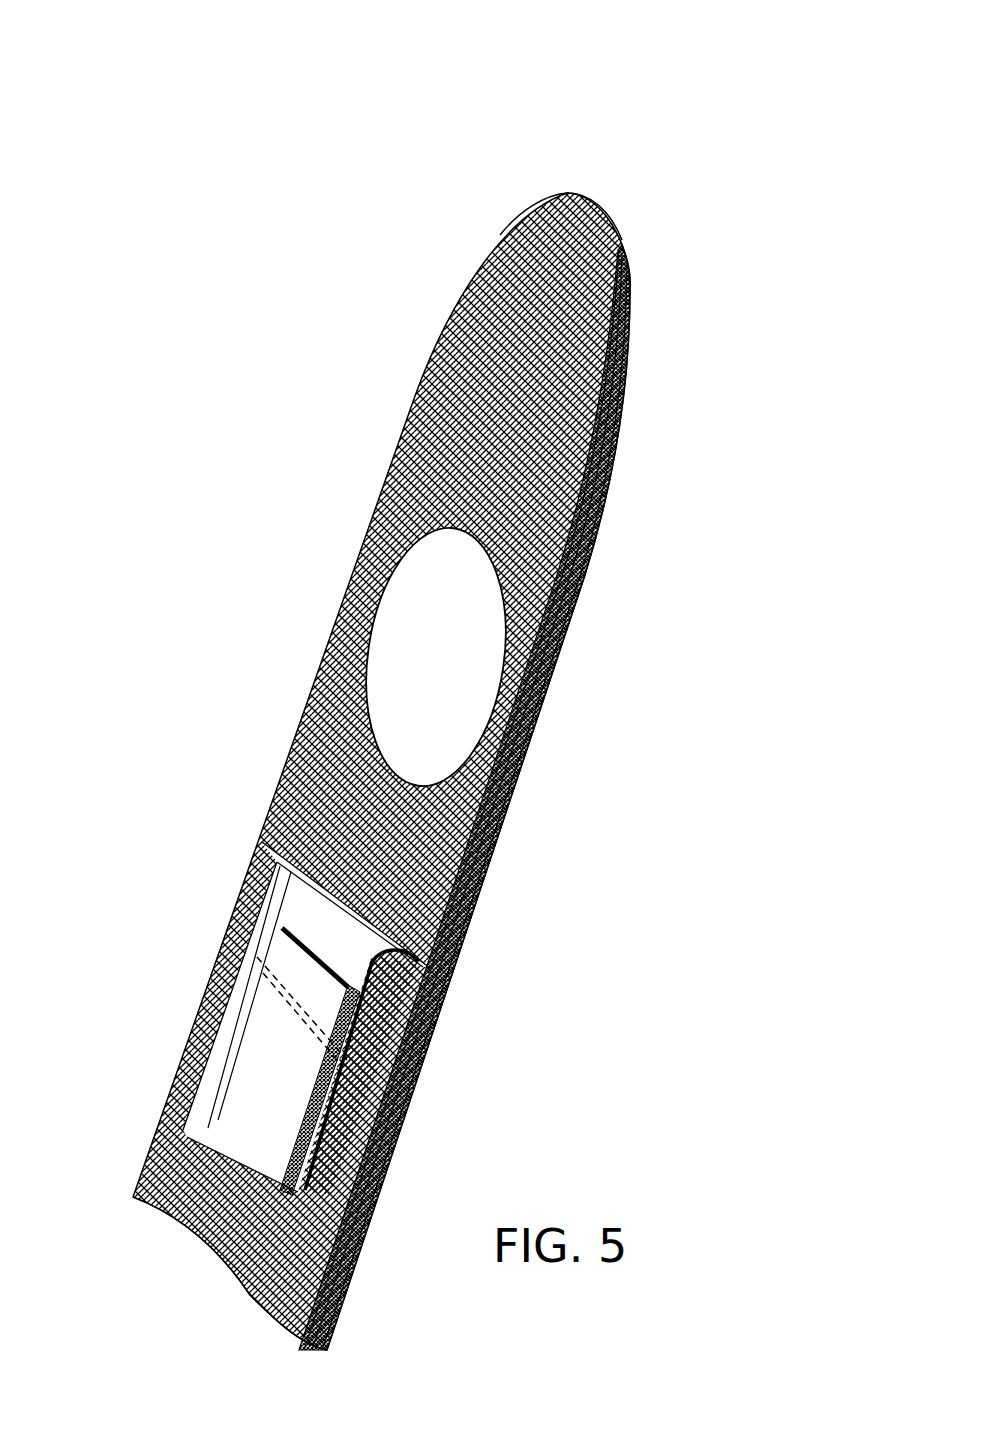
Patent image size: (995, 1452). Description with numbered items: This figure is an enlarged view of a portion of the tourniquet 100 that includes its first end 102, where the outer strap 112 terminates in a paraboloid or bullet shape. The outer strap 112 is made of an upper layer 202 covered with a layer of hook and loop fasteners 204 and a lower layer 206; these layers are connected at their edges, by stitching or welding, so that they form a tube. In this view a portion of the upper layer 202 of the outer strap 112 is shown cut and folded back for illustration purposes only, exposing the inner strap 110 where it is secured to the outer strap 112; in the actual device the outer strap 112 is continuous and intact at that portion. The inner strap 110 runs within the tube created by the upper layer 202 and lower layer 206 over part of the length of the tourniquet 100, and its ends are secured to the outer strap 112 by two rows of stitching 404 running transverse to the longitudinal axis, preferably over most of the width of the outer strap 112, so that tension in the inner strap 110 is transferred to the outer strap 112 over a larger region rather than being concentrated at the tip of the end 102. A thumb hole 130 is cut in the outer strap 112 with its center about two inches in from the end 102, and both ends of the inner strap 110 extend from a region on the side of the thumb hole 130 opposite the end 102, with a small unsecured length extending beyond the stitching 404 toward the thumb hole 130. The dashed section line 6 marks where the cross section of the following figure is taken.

The tourniquet 100 is at (340, 178).
The first end 102 is at (590, 193).
The thumb hole 130 is at (500, 655).
The outer strap 112 is at (515, 784).
The lower layer 206 is at (493, 847).
The upper layer 202 is at (467, 892).
The layer of hook and loop fasteners 204 is at (443, 936).
The stitching 404 is at (295, 1012).
The inner strap 110 is at (313, 1092).
The section line 6- 6 is at (598, 157).